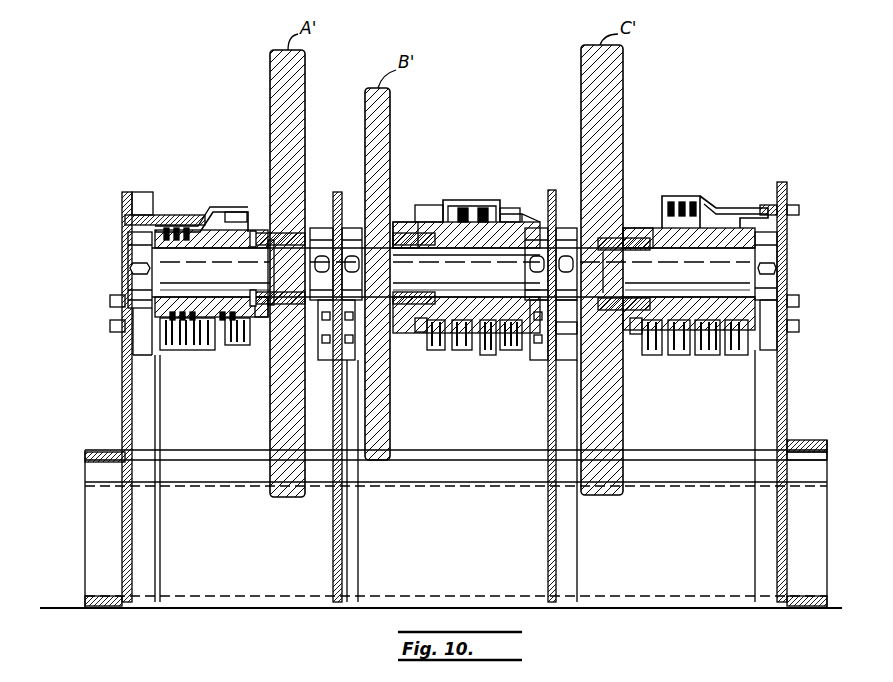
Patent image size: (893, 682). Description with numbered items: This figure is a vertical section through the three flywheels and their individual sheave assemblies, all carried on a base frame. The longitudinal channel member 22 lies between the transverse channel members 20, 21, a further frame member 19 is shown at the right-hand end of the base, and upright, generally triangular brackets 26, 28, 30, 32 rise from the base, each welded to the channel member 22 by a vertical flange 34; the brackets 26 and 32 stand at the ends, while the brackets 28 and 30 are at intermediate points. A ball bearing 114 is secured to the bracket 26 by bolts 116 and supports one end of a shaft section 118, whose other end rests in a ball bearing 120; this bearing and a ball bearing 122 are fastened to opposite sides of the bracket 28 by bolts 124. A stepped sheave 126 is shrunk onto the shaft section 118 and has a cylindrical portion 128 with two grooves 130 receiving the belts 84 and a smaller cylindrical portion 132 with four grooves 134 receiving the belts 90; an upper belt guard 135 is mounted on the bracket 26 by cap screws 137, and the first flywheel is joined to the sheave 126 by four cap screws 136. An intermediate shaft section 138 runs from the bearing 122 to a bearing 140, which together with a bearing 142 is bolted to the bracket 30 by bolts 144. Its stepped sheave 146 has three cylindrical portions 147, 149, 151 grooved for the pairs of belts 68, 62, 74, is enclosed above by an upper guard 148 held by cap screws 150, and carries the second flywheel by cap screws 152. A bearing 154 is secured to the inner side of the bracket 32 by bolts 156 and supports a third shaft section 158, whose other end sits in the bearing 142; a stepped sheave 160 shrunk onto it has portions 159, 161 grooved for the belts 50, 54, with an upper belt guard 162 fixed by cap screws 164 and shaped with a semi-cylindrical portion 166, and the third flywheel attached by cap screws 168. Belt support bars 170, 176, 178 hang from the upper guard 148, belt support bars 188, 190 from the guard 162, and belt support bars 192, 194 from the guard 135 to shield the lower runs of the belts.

The top plate of base channel 19 is at (808, 445).
The transverse channel member 20 is at (816, 452).
The transverse channel member 21 is at (88, 458).
The channel member 22 is at (426, 486).
The bracket 26 is at (137, 194).
The bracket 28 is at (337, 195).
The bracket 30 is at (551, 192).
The bracket 32 is at (778, 185).
The vertical flange 34 is at (147, 515).
The belts 50 is at (681, 204).
The belts 54 is at (730, 357).
The belts 62 is at (470, 210).
The belts 68 is at (502, 210).
The belts 74 is at (421, 207).
The belts 84 is at (242, 210).
The belts 90 is at (186, 226).
The ball bearing 114 is at (124, 380).
The bolts 116 is at (112, 326).
The shaft section 118 is at (130, 262).
The ball bearing 120 is at (322, 230).
The ball bearing 122 is at (348, 228).
The bolts 124 is at (350, 362).
The stepped sheave 126 is at (255, 216).
The cylindrical portion 128 is at (262, 320).
The grooves 130 is at (232, 312).
The cylindrical portion 132 is at (206, 322).
The grooves 134 is at (192, 312).
The upper belt guard 135 is at (197, 212).
The cap screws 136 is at (280, 292).
The cap screws 137 is at (126, 218).
The intermediate shaft section 138 is at (468, 275).
The bearing 140 is at (542, 362).
The bearing 142 is at (560, 352).
The bolts 144 is at (570, 334).
The stepped sheave 146 is at (397, 218).
The cylindrical portion 147 is at (406, 334).
The upper guard 148 is at (522, 210).
The cylindrical portion 149 is at (466, 352).
The cap screws 150 is at (566, 228).
The cylindrical portion 151 is at (484, 206).
The cap screws 152 is at (398, 293).
The bearing 154 is at (778, 346).
The bolts 156 is at (800, 325).
The third shaft section 158 is at (750, 262).
The portion 159 is at (638, 336).
The stepped sheave 160 is at (633, 212).
The portion 161 is at (685, 357).
The upper belt guard 162 is at (716, 206).
The cap screws 164 is at (797, 211).
The semi-cylindrical portion 166 is at (692, 196).
The cap screws 168 is at (601, 294).
The belt support bar 170 is at (433, 352).
The belt support bar 176 is at (491, 357).
The belt support bar 178 is at (508, 352).
The belt support bar 188 is at (660, 357).
The belt support bar 190 is at (706, 357).
The belt support bar 192 is at (230, 346).
The belt support bar 194 is at (192, 350).